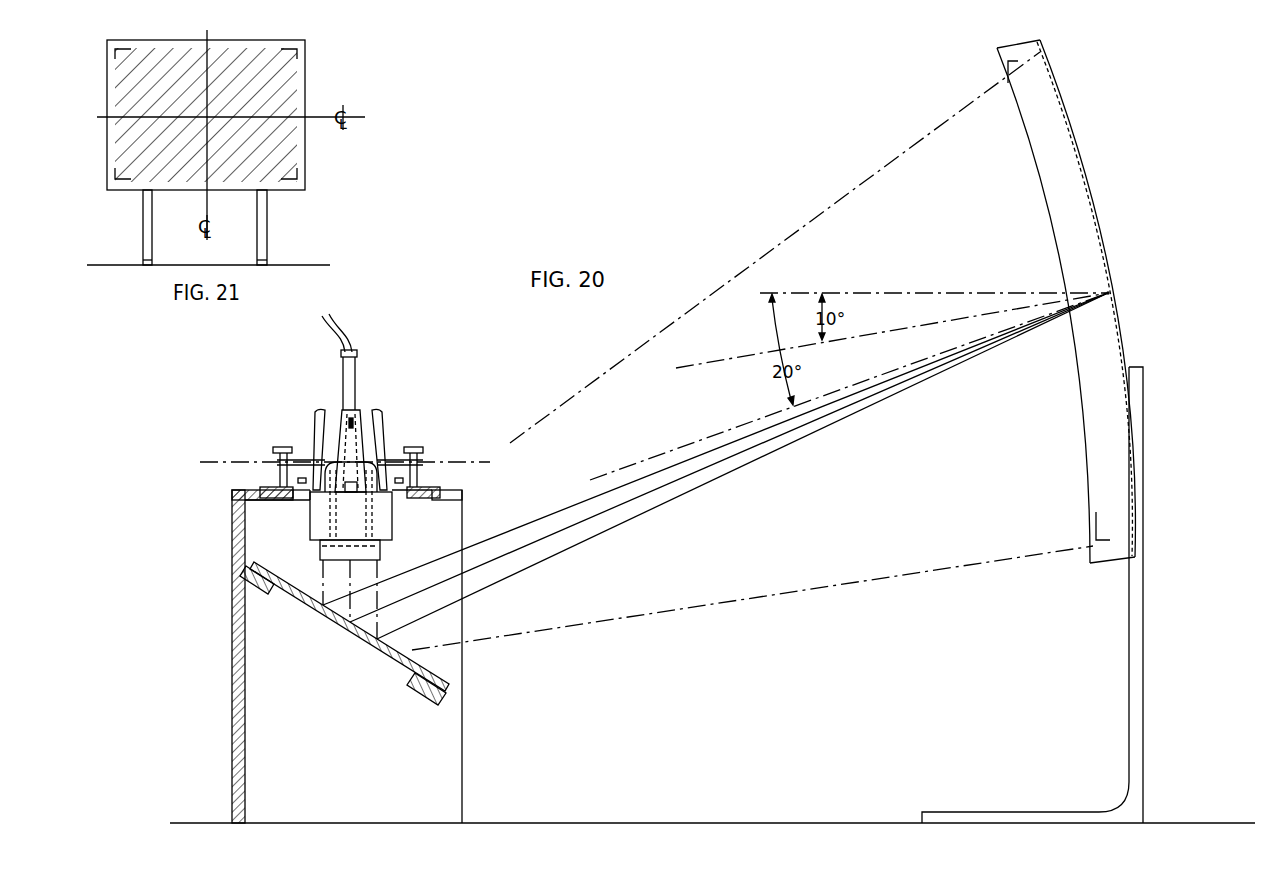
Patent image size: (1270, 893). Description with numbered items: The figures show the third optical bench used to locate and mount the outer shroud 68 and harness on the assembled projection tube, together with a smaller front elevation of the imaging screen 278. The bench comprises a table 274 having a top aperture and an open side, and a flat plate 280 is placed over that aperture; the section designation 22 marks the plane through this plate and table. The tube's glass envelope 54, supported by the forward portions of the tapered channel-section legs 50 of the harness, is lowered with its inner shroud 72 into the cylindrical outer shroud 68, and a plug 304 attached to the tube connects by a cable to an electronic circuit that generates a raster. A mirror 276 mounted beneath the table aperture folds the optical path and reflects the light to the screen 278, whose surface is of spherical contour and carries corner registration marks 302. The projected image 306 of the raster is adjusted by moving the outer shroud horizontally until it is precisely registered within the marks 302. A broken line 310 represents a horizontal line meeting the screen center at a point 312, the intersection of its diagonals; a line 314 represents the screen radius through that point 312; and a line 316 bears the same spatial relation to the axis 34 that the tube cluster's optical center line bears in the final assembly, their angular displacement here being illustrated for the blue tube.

In FIG. 20, the section line 22 is at (208, 450).
In FIG. 20, the axis 34 is at (562, 525).
In FIG. 20, the tapered channel-section legs 50 is at (318, 428).
In FIG. 20, the glass envelope 54 is at (352, 440).
In FIG. 20, the outer shroud 68 is at (310, 520).
In FIG. 20, the inner shroud 72 is at (320, 552).
In FIG. 20, the table 274 is at (262, 490).
In FIG. 20, the mirror 276 is at (392, 647).
In FIG. 21, the screen 278 is at (287, 192).
In FIG. 20, the screen 278 is at (1112, 177).
In FIG. 20, the flat plate 280 is at (423, 483).
In FIG. 21, the corner registration marks 302 is at (115, 54).
In FIG. 20, the corner registration marks 302 is at (1007, 70).
In FIG. 20, the plug 304 is at (357, 353).
In FIG. 21, the image 306 is at (277, 89).
In FIG. 20, the broken line 310 is at (845, 292).
In FIG. 20, the point 312 is at (1105, 297).
In FIG. 20, the line 314 is at (722, 362).
In FIG. 20, the line 316 is at (630, 467).